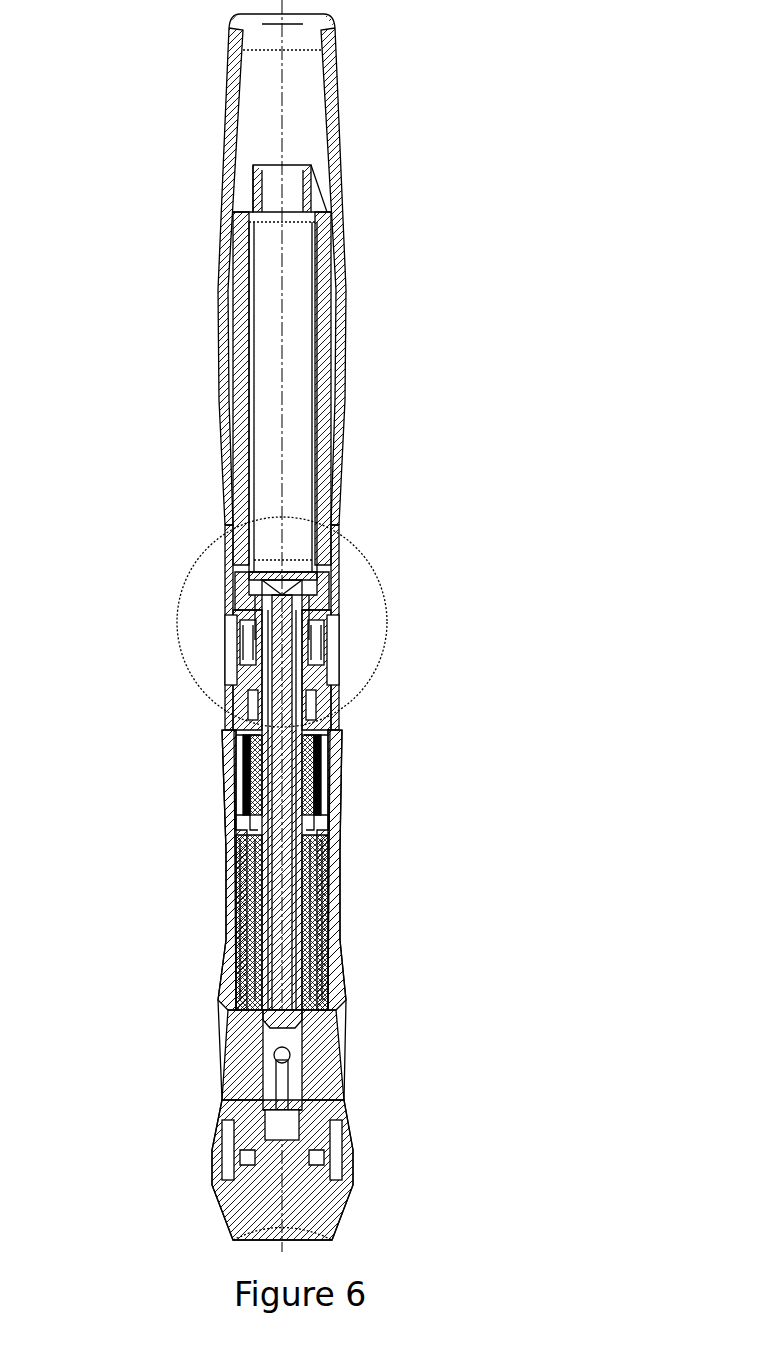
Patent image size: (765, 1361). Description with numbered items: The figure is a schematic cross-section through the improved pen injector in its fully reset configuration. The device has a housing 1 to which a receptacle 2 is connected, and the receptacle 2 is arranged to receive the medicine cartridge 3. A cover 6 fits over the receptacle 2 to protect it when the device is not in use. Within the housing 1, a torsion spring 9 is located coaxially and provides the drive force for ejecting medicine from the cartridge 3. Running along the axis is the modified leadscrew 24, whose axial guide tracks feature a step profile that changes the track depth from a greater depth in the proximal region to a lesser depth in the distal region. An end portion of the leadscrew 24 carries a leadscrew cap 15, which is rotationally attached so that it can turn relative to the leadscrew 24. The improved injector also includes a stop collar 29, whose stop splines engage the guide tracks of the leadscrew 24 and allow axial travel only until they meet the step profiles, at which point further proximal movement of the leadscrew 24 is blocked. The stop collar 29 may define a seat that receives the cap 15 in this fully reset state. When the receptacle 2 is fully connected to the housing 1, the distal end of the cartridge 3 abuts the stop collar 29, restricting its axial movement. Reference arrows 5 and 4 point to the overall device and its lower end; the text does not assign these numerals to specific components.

The housing 1 is at (333, 957).
The receptacle 2 is at (238, 287).
The medicine cartridge 3 is at (318, 328).
The dose button 4 is at (438, 1198).
The drug delivery device 5 is at (440, 70).
The cover 6 is at (235, 110).
The torsion spring 9 is at (328, 872).
The leadscrew cap 15 is at (245, 571).
The leadscrew 24 is at (283, 783).
The stop collar 29 is at (302, 608).